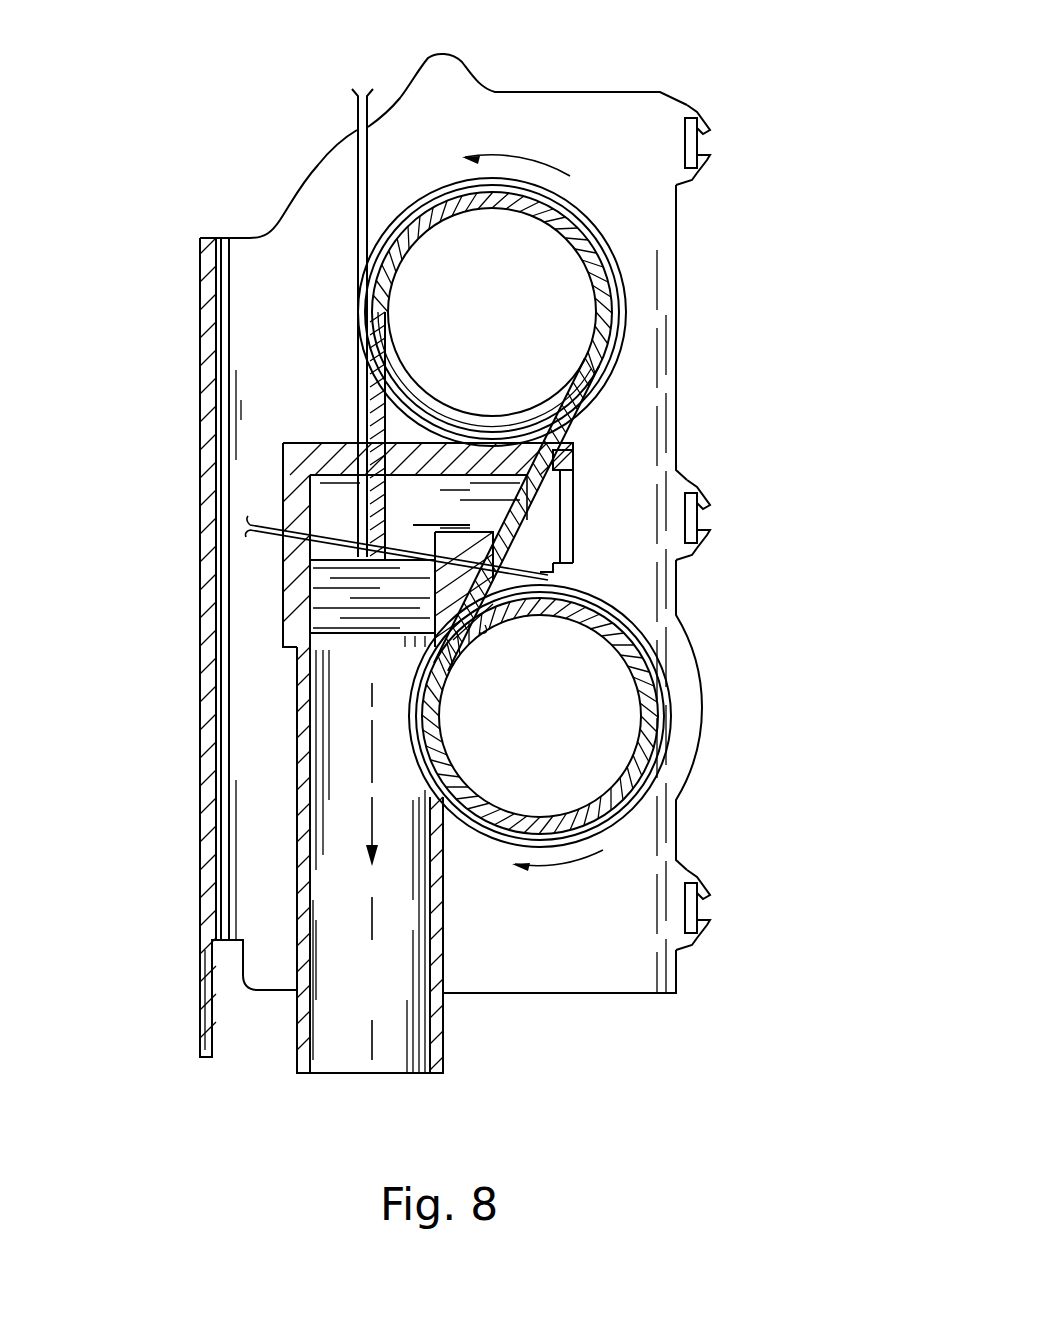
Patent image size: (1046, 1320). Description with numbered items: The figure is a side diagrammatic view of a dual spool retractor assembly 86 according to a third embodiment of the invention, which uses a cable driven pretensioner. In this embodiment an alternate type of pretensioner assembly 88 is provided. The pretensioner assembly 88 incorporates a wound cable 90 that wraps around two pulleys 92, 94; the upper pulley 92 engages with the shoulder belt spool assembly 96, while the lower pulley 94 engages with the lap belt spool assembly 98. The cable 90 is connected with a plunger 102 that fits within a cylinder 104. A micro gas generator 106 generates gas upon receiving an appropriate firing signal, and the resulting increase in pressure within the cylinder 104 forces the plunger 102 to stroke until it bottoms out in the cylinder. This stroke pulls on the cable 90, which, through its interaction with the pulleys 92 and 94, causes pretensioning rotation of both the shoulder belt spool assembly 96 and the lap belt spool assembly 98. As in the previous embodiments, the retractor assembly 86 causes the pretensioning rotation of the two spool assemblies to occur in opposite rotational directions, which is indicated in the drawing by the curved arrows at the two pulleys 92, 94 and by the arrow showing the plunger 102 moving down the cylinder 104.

The dual spool retractor assembly 86 is at (745, 165).
The pretensioner assembly 88 is at (615, 378).
The wound cable 90 is at (575, 425).
The pulley 92 is at (610, 313).
The pulley 94 is at (633, 765).
The shoulder belt spool assembly 96 is at (545, 188).
The lap belt spool assembly 98 is at (685, 738).
The plunger 102 is at (333, 600).
The cylinder 104 is at (320, 783).
The micro gas generator 106 is at (562, 508).